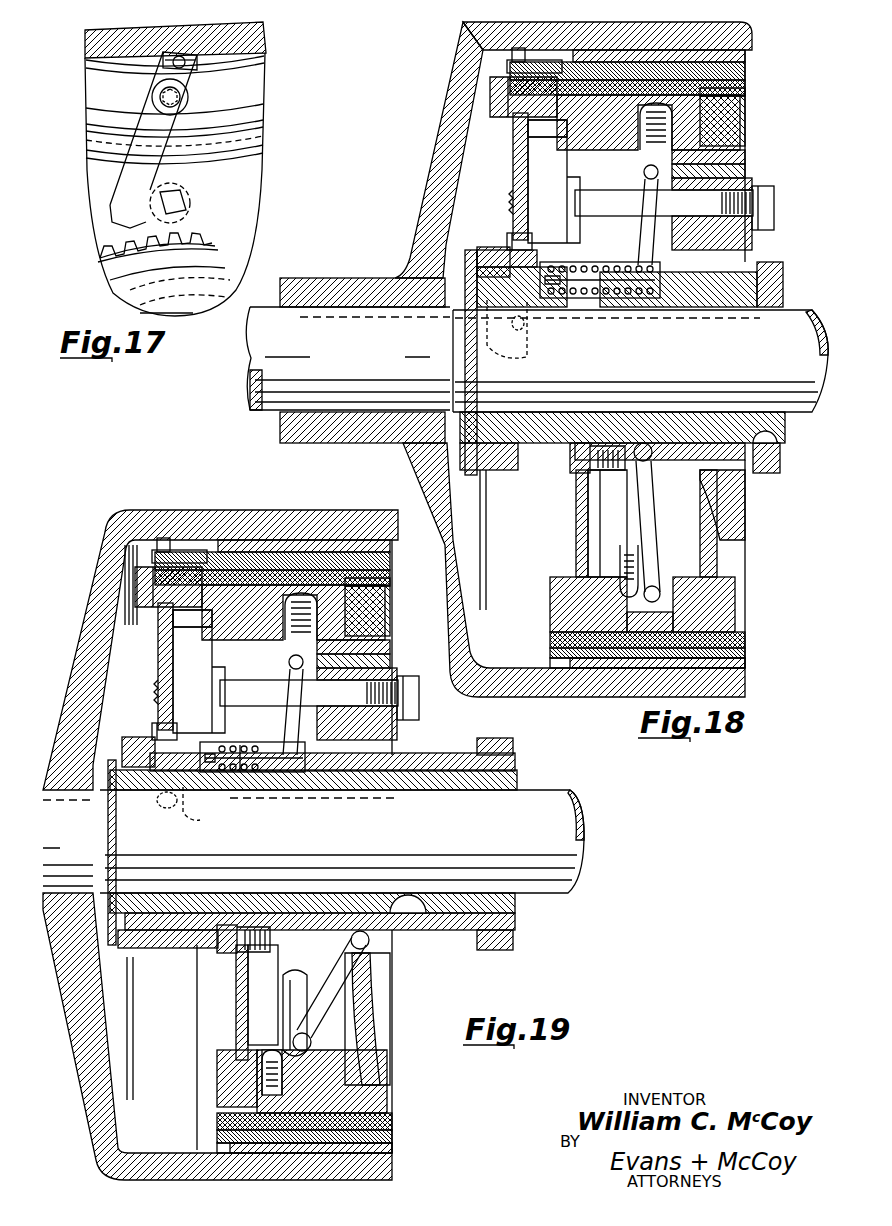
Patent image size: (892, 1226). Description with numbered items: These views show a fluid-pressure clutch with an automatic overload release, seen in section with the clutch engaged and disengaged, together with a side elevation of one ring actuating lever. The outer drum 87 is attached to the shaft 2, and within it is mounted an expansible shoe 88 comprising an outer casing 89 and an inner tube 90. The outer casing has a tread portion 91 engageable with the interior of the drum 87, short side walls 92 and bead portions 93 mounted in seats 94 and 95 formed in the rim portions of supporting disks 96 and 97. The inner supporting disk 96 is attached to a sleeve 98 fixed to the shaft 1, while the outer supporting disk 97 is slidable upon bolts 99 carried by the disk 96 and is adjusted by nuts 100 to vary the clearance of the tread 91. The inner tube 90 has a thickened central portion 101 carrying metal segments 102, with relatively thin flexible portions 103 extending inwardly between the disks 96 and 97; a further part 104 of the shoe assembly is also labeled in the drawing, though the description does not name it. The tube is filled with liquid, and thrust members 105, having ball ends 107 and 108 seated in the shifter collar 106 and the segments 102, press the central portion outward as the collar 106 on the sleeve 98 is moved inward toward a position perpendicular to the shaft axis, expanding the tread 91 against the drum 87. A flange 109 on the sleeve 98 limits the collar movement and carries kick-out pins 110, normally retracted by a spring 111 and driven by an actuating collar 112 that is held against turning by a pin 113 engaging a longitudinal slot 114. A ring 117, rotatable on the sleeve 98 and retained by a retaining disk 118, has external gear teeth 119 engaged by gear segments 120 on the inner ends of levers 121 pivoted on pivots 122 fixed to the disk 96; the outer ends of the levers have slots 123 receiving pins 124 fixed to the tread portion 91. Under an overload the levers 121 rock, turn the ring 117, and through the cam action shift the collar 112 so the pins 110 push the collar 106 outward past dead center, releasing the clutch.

In FIG. 18, the shaft 1 is at (706, 373).
In FIG. 19, the shaft 1 is at (446, 841).
In FIG. 18, the shaft 2 is at (334, 373).
In FIG. 19, the shaft 2 is at (63, 852).
In FIG. 17, the outer drum 87 is at (256, 46).
In FIG. 18, the outer drum 87 is at (492, 668).
In FIG. 18, the expansible shoe 88 is at (617, 668).
In FIG. 19, the expansible shoe 88 is at (395, 1121).
In FIG. 18, the outer casing 89 is at (747, 648).
In FIG. 19, the outer casing 89 is at (392, 560).
In FIG. 18, the inner tube 90 is at (732, 627).
In FIG. 19, the inner tube 90 is at (307, 577).
In FIG. 18, the tread portion 91 is at (750, 56).
In FIG. 19, the tread portion 91 is at (372, 1141).
In FIG. 18, the side walls 92 is at (748, 86).
In FIG. 18, the bead portions 93 is at (738, 122).
In FIG. 18, the seat 94 is at (585, 160).
In FIG. 18, the seat 95 is at (745, 151).
In FIG. 18, the inner supporting disk 96 is at (575, 168).
In FIG. 19, the inner supporting disk 96 is at (237, 1033).
In FIG. 18, the outer supporting disk 97 is at (738, 168).
In FIG. 19, the outer supporting disk 97 is at (355, 1048).
In FIG. 18, the sleeve 98 is at (581, 413).
In FIG. 19, the sleeve 98 is at (346, 893).
In FIG. 18, the bolts 99 is at (590, 210).
In FIG. 19, the bolts 99 is at (320, 693).
In FIG. 18, the nuts 100 is at (762, 217).
In FIG. 19, the nuts 100 is at (407, 703).
In FIG. 18, the thickened central portion 101 is at (666, 88).
In FIG. 19, the thickened central portion 101 is at (276, 580).
In FIG. 18, the metal segments 102 is at (648, 150).
In FIG. 19, the metal segments 102 is at (272, 657).
In FIG. 18, the flexible portions 103 is at (585, 568).
In FIG. 19, the flexible portions 103 is at (243, 650).
In FIG. 18, the pressure plate 104 is at (732, 103).
In FIG. 19, the pressure plate 104 is at (240, 580).
In FIG. 18, the thrust members 105 is at (657, 230).
In FIG. 19, the thrust members 105 is at (345, 985).
In FIG. 18, the shifter collar 106 is at (771, 463).
In FIG. 19, the shifter collar 106 is at (444, 762).
In FIG. 18, the ball end 107 is at (655, 458).
In FIG. 19, the ball end 107 is at (375, 953).
In FIG. 18, the ball end 108 is at (648, 540).
In FIG. 19, the ball end 108 is at (300, 1030).
In FIG. 18, the flange 109 is at (578, 490).
In FIG. 19, the flange 109 is at (238, 985).
In FIG. 18, the kick-out pins 110 is at (594, 305).
In FIG. 19, the kick-out pins 110 is at (295, 772).
In FIG. 18, the spring 111 is at (566, 300).
In FIG. 19, the spring 111 is at (232, 775).
In FIG. 18, the actuating collar 112 is at (533, 305).
In FIG. 19, the actuating collar 112 is at (212, 778).
In FIG. 18, the pin 113 is at (556, 373).
In FIG. 19, the pin 113 is at (158, 806).
In FIG. 18, the longitudinal slot 114 is at (505, 330).
In FIG. 19, the longitudinal slot 114 is at (184, 800).
In FIG. 18, the ring 117 is at (488, 248).
In FIG. 19, the ring 117 is at (132, 738).
In FIG. 18, the retaining disk 118 is at (477, 470).
In FIG. 19, the retaining disk 118 is at (116, 947).
In FIG. 17, the external gear teeth 119 is at (200, 242).
In FIG. 18, the external gear teeth 119 is at (508, 235).
In FIG. 19, the external gear teeth 119 is at (158, 720).
In FIG. 17, the gear segments 120 is at (118, 238).
In FIG. 18, the gear segments 120 is at (509, 193).
In FIG. 19, the gear segments 120 is at (158, 678).
In FIG. 17, the levers 121 is at (140, 165).
In FIG. 18, the levers 121 is at (513, 177).
In FIG. 19, the levers 121 is at (160, 652).
In FIG. 17, the pivots 122 is at (187, 97).
In FIG. 18, the pivots 122 is at (519, 112).
In FIG. 17, the slots 123 is at (184, 67).
In FIG. 18, the slots 123 is at (515, 55).
In FIG. 19, the slots 123 is at (160, 532).
In FIG. 17, the pins 124 is at (168, 68).
In FIG. 18, the pins 124 is at (512, 67).
In FIG. 19, the pins 124 is at (153, 551).